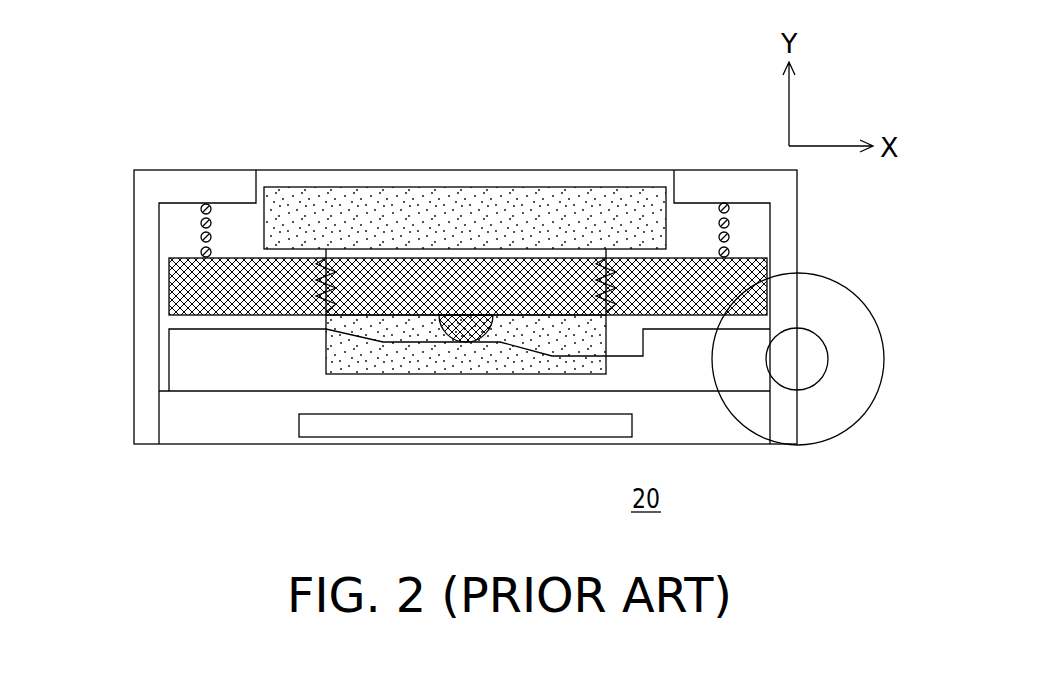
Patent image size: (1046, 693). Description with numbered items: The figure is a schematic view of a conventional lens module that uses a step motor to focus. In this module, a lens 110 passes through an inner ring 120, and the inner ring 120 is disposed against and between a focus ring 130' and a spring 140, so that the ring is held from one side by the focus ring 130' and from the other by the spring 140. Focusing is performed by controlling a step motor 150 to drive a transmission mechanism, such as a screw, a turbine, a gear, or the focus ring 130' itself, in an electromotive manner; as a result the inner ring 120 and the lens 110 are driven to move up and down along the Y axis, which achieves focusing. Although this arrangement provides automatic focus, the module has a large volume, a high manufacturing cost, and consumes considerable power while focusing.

The lens 110 is at (533, 203).
The inner ring 120 is at (742, 271).
The focus ring 130' is at (417, 383).
The spring 140 is at (740, 232).
The step motor 150 is at (840, 403).